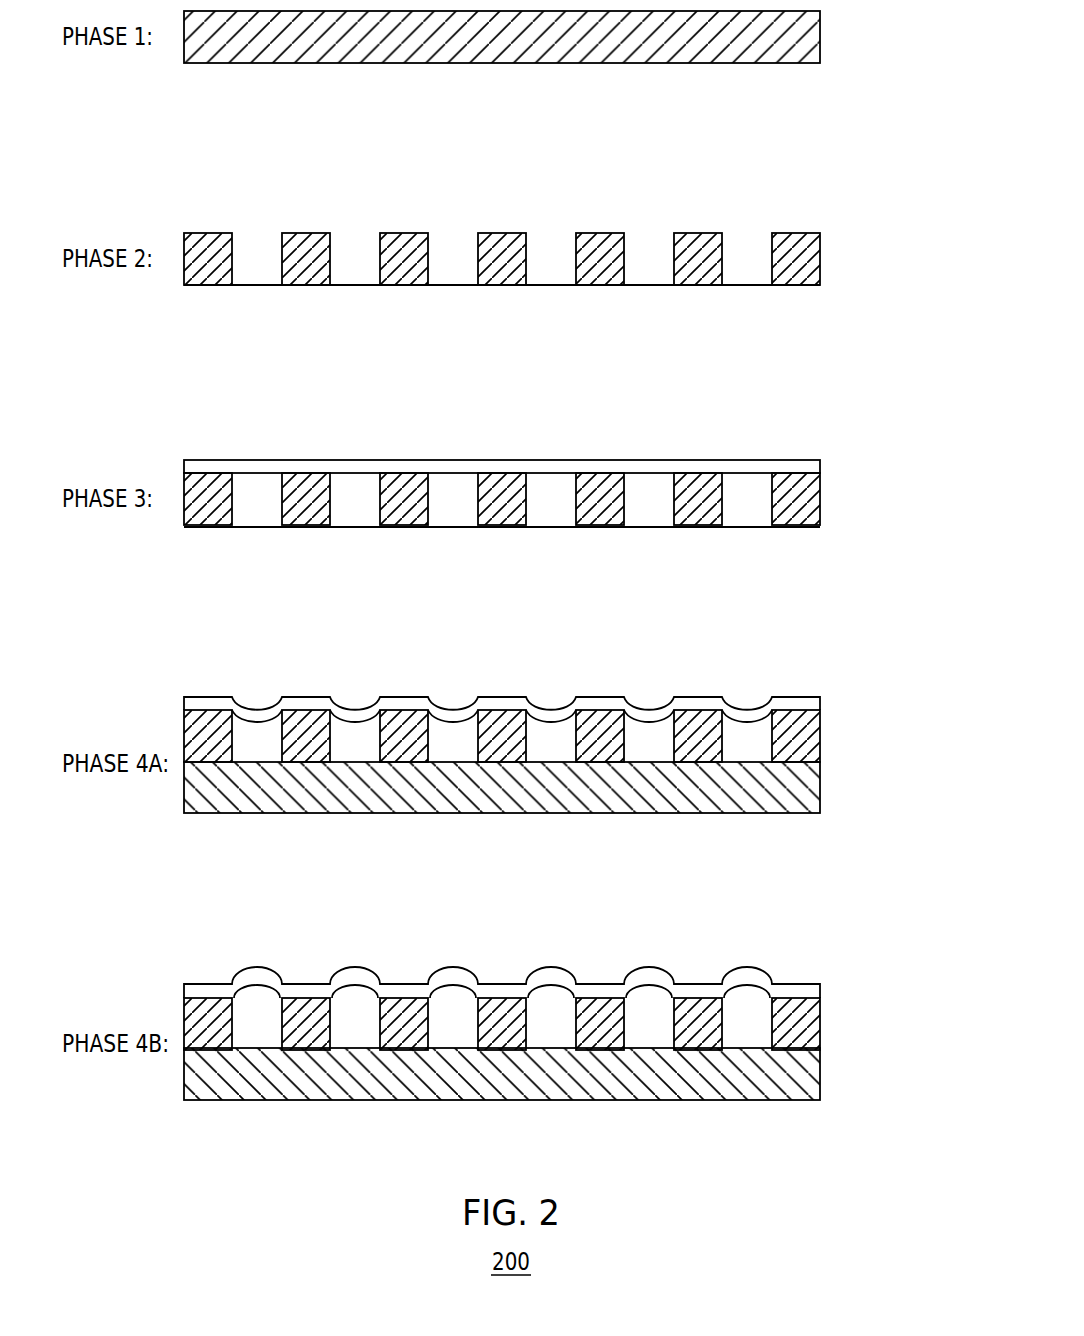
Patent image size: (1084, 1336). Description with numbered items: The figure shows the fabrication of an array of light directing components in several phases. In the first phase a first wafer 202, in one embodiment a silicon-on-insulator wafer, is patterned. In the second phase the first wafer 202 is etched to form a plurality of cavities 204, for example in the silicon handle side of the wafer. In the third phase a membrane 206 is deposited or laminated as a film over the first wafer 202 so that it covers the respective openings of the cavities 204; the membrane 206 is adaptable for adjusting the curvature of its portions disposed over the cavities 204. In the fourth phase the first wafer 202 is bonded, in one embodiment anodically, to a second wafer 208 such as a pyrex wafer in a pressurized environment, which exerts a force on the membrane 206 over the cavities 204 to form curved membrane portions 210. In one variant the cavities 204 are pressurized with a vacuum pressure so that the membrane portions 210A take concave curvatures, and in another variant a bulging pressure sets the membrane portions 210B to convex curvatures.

The first wafer 202 is at (820, 31).
The cavities 204 is at (502, 699).
The membrane 206 is at (820, 466).
The second wafer 208 is at (820, 786).
The curved membrane portions 210 is at (504, 816).
The membrane portions (concave) 210A is at (260, 708).
The membrane portions (convex) 210B is at (260, 997).